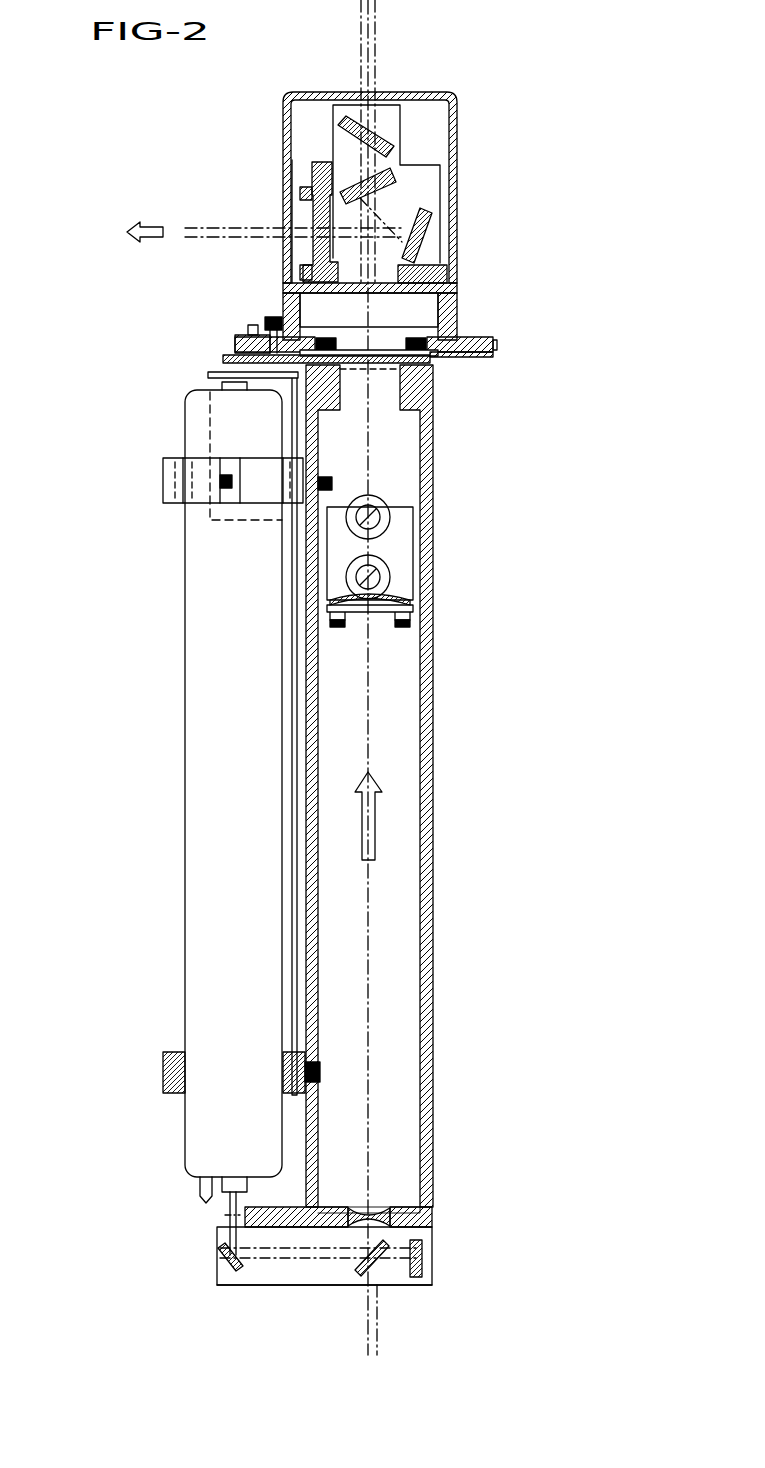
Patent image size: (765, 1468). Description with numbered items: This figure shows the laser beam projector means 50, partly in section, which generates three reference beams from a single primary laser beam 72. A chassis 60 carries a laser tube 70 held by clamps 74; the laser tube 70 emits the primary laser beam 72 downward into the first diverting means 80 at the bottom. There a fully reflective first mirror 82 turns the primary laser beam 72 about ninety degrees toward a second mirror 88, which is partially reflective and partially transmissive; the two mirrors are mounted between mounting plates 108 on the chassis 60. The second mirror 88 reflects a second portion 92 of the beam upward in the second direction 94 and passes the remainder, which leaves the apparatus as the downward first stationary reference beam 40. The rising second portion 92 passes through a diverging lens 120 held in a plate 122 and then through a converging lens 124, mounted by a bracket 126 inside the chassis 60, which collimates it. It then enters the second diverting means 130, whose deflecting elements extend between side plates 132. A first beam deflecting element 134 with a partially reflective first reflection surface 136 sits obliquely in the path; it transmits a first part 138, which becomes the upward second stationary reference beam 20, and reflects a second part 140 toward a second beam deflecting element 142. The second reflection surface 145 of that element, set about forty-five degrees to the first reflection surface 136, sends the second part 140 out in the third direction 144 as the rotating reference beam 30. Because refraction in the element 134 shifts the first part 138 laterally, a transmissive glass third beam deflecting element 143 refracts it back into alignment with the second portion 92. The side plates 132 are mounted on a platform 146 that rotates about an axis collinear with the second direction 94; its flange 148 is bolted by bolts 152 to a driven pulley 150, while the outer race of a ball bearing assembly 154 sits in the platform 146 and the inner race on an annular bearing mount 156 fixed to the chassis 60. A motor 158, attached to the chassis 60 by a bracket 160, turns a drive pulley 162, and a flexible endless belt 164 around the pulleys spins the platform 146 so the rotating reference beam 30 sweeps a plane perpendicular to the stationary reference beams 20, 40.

The second stationary reference beam 20 is at (378, 48).
The rotating reference beam 30 is at (208, 225).
The first stationary reference beam 40 is at (380, 1340).
The laser beam projector means 50 is at (566, 294).
The chassis 60 is at (433, 914).
The laser tube 70 is at (187, 740).
The primary laser beam 72 is at (225, 1215).
The clamps 74 is at (163, 484).
The first diverting means 80 is at (230, 1290).
The first reflecting element or mirror 82 is at (218, 1262).
The second reflecting element or mirror 88 is at (360, 1276).
The second portion 92 is at (371, 955).
The second direction 94 is at (378, 825).
The mounting plates 108 is at (278, 1286).
The diverging lens 120 is at (372, 1215).
The plate 122 is at (432, 1218).
The converging lens 124 is at (362, 628).
The bracket 126 is at (330, 613).
The second diverting means 130 is at (280, 110).
The side plates 132 is at (412, 100).
The first beam deflecting mirror or element 134 is at (398, 175).
The first reflection surface 136 is at (398, 184).
The first part 138 is at (330, 152).
The second part 140 is at (440, 195).
The second beam deflecting mirror or element 142 is at (436, 240).
The third beam deflecting element 143 is at (320, 97).
The third direction 144 is at (152, 220).
The second reflection surface 145 is at (420, 222).
The platform 146 is at (450, 300).
The flange 148 is at (470, 338).
The driven pulley 150 is at (468, 360).
The bolts 152 is at (275, 318).
The ball bearing assembly 154 is at (308, 330).
The annular bearing mount 156 is at (368, 330).
The motor 158 is at (205, 376).
The bracket 160 is at (225, 358).
The drive pulley 162 is at (240, 332).
The flexible endless belt 164 is at (500, 345).